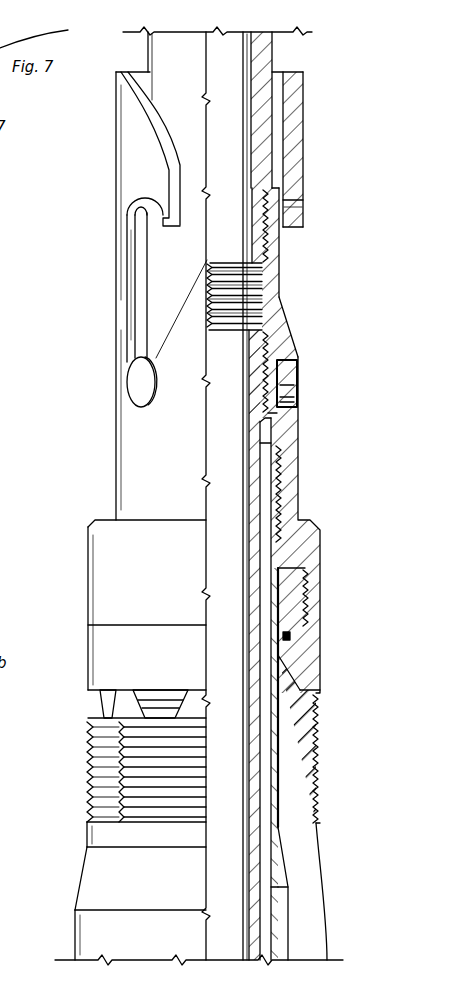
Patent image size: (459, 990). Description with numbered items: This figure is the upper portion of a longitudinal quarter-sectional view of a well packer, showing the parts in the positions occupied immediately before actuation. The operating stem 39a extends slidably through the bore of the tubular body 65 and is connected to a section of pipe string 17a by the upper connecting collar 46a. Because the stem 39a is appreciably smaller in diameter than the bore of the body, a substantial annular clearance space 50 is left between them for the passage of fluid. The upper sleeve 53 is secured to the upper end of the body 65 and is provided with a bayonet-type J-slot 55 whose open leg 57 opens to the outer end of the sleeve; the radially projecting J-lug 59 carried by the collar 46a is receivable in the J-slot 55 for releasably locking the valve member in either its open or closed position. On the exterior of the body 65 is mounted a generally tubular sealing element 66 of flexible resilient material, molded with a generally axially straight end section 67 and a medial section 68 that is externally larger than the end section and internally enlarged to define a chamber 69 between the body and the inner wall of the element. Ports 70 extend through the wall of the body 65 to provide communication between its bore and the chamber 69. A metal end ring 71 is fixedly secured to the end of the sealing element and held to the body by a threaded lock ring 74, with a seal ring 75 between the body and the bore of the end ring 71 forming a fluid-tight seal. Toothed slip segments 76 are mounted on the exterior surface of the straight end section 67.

The pipe string 17a is at (272, 52).
The operating stem 39a is at (253, 618).
The upper collar 46a is at (279, 275).
The annular clearance space 50 is at (263, 500).
The upper sleeve 53 is at (116, 151).
The J-slot 55 is at (127, 273).
The open leg 57 is at (161, 137).
The J-lug 59 is at (140, 383).
The tubular body 65 is at (273, 678).
The sealing element 66 is at (72, 897).
The end section 67 is at (295, 772).
The medial section 68 is at (320, 943).
The chamber 69 is at (283, 915).
The ports 70 is at (273, 760).
The end ring 71 is at (310, 650).
The threaded lock ring 74 is at (315, 575).
The seal ring 75 is at (283, 635).
The toothed slip segments 76 is at (310, 740).